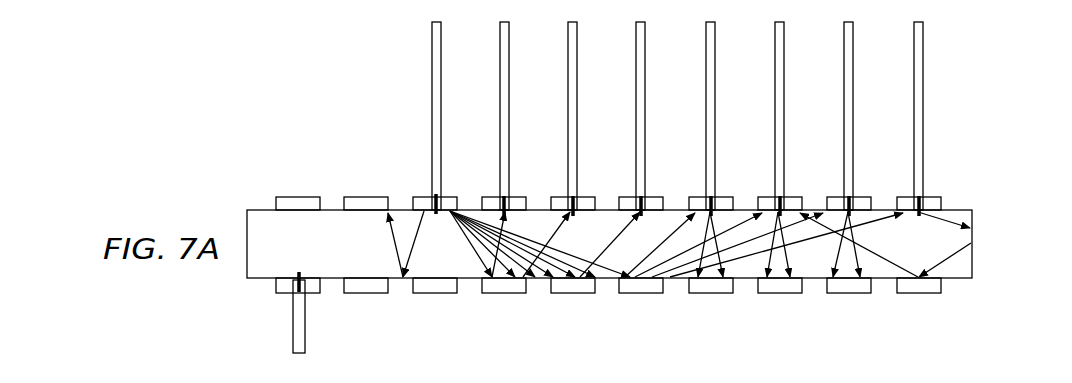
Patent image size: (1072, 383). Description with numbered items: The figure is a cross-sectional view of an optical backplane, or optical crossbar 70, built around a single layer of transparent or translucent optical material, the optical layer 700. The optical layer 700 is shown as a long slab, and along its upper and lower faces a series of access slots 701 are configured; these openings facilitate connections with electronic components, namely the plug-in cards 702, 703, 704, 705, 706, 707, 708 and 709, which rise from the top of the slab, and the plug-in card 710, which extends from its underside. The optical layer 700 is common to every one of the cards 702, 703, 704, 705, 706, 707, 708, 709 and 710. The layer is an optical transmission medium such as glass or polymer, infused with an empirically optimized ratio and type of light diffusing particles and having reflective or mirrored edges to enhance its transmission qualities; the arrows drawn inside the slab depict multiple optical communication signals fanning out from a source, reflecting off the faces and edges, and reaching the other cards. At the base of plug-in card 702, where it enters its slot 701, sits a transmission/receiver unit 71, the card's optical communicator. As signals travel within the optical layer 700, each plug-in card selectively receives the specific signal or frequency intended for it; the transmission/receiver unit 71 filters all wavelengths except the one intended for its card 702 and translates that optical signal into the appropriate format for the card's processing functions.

The optical crossbar 70 is at (993, 189).
The optical layer 700 is at (973, 262).
The access slots 701 is at (299, 197).
The plug-in card 702 is at (431, 110).
The plug-in card 703 is at (499, 110).
The plug-in card 704 is at (567, 110).
The plug-in card 705 is at (635, 110).
The plug-in card 706 is at (716, 110).
The plug-in card 707 is at (785, 110).
The plug-in card 708 is at (854, 110).
The plug-in card 709 is at (924, 110).
The plug-in card 710 is at (293, 325).
The transmission/receiver unit 71 is at (433, 202).